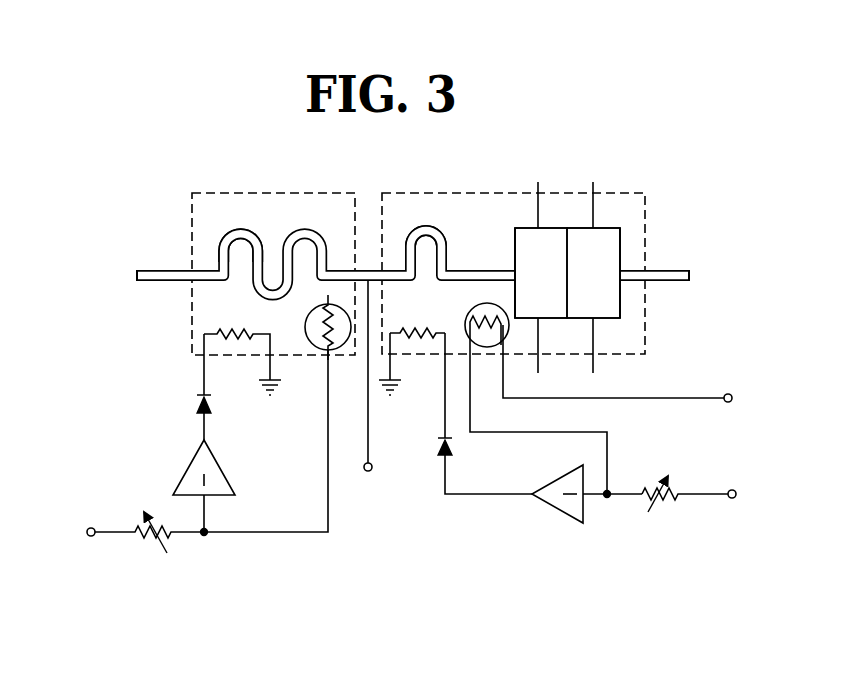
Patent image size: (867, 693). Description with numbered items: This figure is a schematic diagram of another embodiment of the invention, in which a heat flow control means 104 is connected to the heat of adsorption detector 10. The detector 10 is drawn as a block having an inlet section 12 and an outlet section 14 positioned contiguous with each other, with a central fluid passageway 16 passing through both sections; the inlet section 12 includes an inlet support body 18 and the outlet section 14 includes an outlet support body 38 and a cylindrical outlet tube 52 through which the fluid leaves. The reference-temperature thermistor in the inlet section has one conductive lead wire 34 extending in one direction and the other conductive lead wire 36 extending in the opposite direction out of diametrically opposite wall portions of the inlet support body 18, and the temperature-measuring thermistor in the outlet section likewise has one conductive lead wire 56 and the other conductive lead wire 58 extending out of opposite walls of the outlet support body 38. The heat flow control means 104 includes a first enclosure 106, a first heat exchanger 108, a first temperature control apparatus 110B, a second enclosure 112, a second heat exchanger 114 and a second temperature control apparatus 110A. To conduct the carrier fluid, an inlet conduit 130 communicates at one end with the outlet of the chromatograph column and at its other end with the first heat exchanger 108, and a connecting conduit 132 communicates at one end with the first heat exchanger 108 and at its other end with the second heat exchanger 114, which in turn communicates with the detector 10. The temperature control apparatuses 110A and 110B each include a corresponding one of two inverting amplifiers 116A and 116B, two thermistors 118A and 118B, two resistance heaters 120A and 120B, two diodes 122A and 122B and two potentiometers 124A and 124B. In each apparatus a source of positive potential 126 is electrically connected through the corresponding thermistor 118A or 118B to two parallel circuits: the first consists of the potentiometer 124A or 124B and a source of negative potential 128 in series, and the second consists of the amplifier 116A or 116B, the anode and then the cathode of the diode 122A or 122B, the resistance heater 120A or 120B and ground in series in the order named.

The heat of interaction detector 10 is at (572, 220).
The inlet section 12 is at (547, 276).
The outlet section 14 is at (602, 276).
The central fluid passageway 16 is at (476, 269).
The inlet support body 18 is at (522, 228).
The conductive lead wire 34 is at (538, 187).
The conductive lead wire 36 is at (539, 344).
The outlet support body 38 is at (620, 236).
The cylindrical outlet tube 52 is at (670, 270).
The conductive lead wire 56 is at (593, 187).
The conductive lead wire 58 is at (594, 344).
The heat flow control means 104 is at (320, 176).
The first enclosure 106 is at (192, 193).
The first heat exchanger 108 is at (242, 228).
The second temperature control apparatus 110A is at (652, 461).
The first temperature control apparatus 110B is at (170, 438).
The second enclosure 112 is at (648, 334).
The second heat exchanger 114 is at (430, 225).
The inverting amplifier 116A is at (562, 513).
The inverting amplifier 116B is at (190, 464).
The thermistor 118A is at (490, 337).
The thermistor 118B is at (320, 352).
The resistance heater 120A is at (428, 344).
The resistance heater 120B is at (206, 340).
The diode 122A is at (455, 443).
The diode 122B is at (196, 399).
The potentiometer 124A is at (664, 503).
The potentiometer 124B is at (176, 541).
The source of positive potential 126 is at (373, 468).
The source of negative potential 128 is at (91, 537).
The inlet conduit 130 is at (143, 270).
The connecting conduit 132 is at (368, 270).